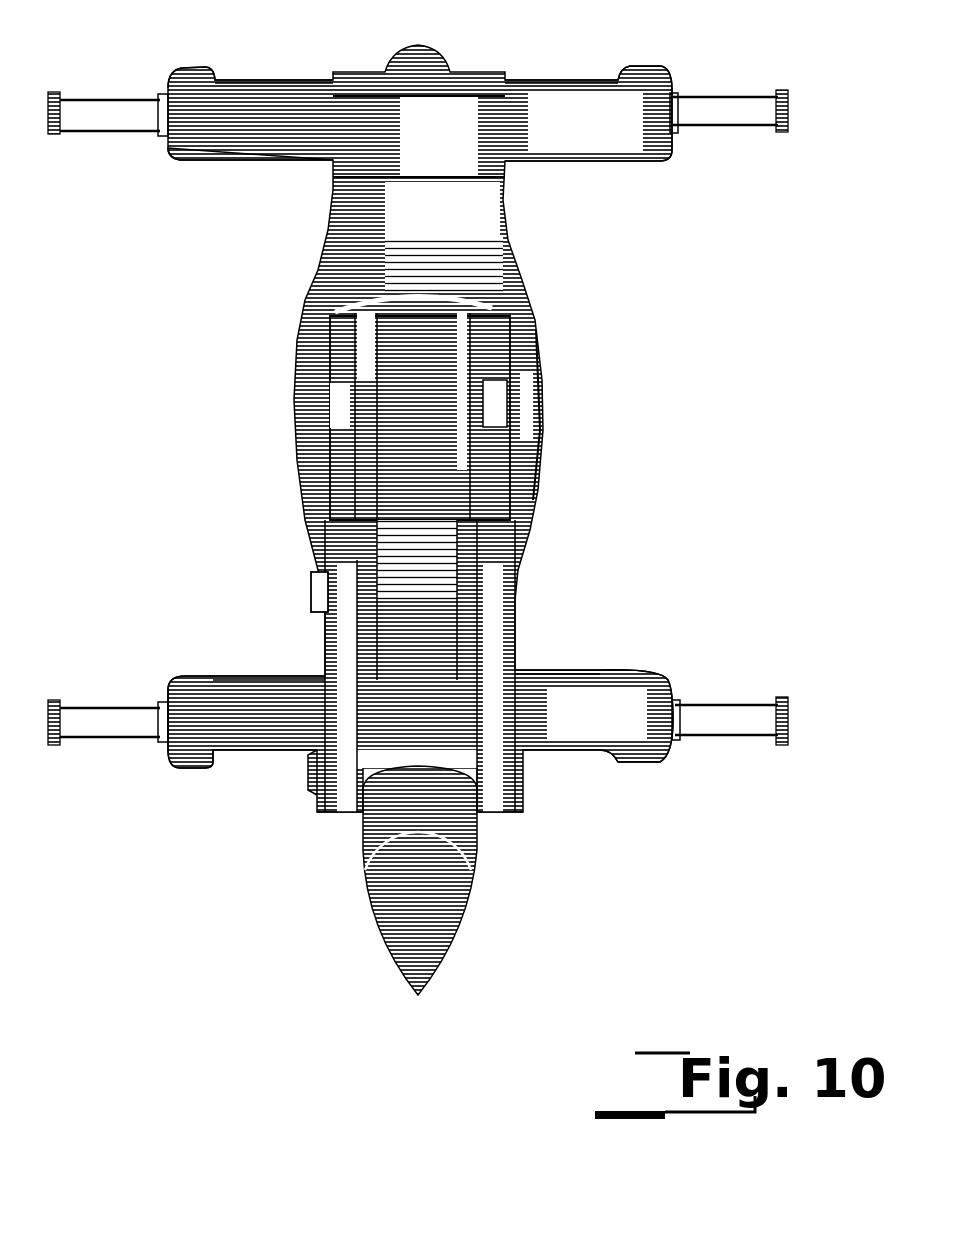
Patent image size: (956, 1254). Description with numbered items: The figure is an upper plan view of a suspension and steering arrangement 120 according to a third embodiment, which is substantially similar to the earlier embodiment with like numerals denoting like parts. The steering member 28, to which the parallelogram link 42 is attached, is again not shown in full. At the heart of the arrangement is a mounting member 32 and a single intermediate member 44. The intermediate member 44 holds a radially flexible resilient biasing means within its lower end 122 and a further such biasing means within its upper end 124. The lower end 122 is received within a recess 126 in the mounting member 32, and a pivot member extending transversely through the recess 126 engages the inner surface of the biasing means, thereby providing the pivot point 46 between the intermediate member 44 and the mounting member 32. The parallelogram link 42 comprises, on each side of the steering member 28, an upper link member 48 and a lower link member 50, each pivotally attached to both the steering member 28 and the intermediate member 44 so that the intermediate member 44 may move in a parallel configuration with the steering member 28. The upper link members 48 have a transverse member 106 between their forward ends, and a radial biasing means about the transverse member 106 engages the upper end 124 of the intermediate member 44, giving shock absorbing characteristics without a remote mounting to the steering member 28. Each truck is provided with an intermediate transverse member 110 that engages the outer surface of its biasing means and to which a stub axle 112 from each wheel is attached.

The steering member 28 is at (478, 886).
The mounting member 32 is at (515, 262).
The parallelogram link 42 is at (288, 546).
The intermediate member 44 is at (455, 440).
The pivot point 46 is at (548, 404).
The upper link member 48 is at (505, 625).
The lower link member 50 is at (498, 490).
The transverse member 106 is at (312, 592).
The intermediate transverse member 110 is at (250, 78).
The stub axle 112 is at (105, 98).
The suspension and steering arrangement 120 is at (760, 304).
The lower end 122 is at (335, 310).
The upper end 124 is at (430, 580).
The recess 126 is at (305, 340).